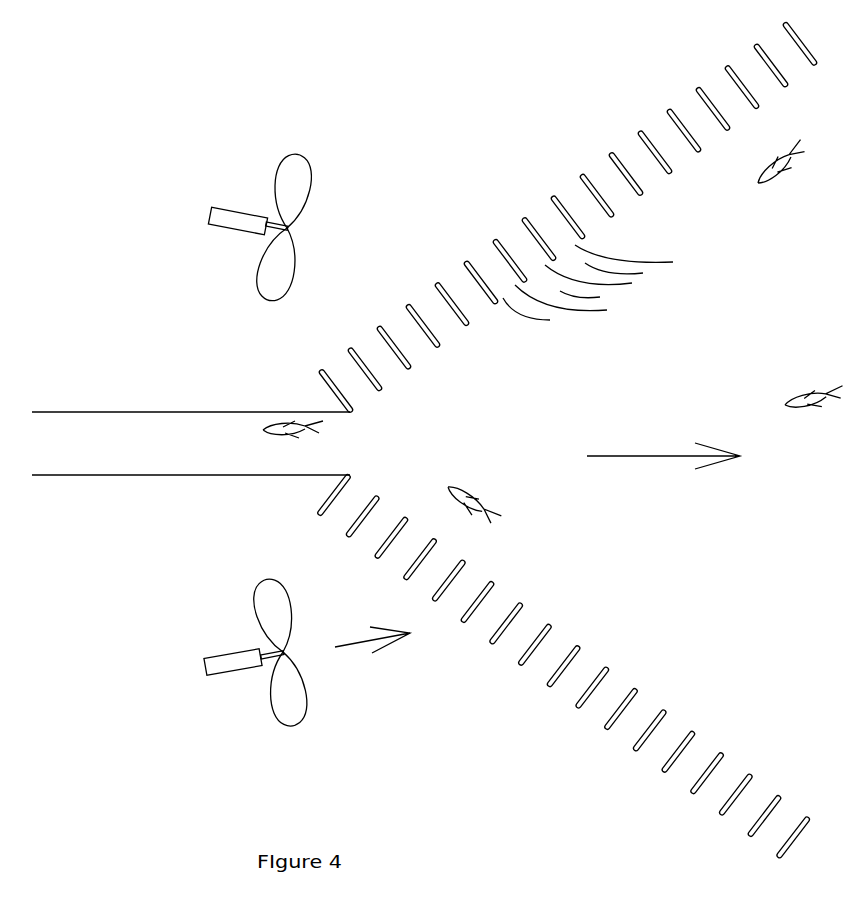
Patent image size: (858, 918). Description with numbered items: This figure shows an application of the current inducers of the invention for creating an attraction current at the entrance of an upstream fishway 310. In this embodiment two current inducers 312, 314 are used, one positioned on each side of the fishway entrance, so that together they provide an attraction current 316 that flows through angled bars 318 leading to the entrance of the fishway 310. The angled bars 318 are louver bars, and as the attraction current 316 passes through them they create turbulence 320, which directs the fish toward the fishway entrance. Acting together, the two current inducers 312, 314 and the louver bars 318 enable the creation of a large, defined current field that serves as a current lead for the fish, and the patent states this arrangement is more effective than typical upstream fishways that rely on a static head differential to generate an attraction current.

The upstream fishway 310 is at (165, 443).
The current inducer 312 is at (267, 182).
The current inducer 314 is at (246, 690).
The attraction current 316 is at (658, 465).
The angled bars 318 is at (610, 663).
The turbulence 320 is at (633, 292).